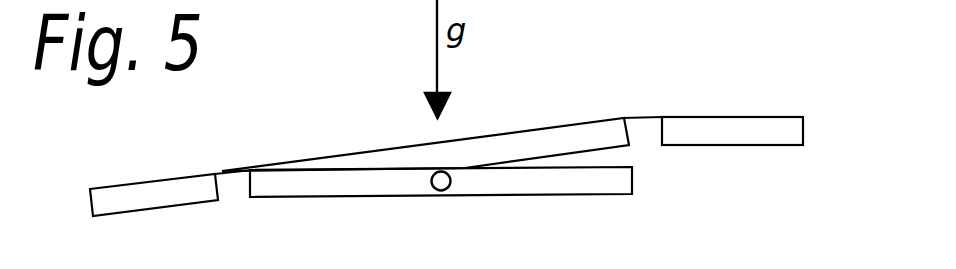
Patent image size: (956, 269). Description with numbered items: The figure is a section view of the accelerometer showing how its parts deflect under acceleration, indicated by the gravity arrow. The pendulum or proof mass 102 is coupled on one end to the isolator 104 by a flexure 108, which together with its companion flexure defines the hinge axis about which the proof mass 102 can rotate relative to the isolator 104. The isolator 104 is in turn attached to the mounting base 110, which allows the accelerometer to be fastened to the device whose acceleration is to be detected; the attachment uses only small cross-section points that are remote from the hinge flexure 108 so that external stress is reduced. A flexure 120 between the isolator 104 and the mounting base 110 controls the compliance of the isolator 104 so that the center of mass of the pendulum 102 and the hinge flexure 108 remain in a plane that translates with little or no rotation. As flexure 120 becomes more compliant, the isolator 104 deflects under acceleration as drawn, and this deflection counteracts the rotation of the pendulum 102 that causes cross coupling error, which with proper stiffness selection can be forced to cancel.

The pendulum or proof mass 102 is at (528, 184).
The isolator 104 is at (137, 198).
The flexure 108 is at (231, 171).
The mounting base 110 is at (738, 132).
The flexure 120 is at (643, 116).